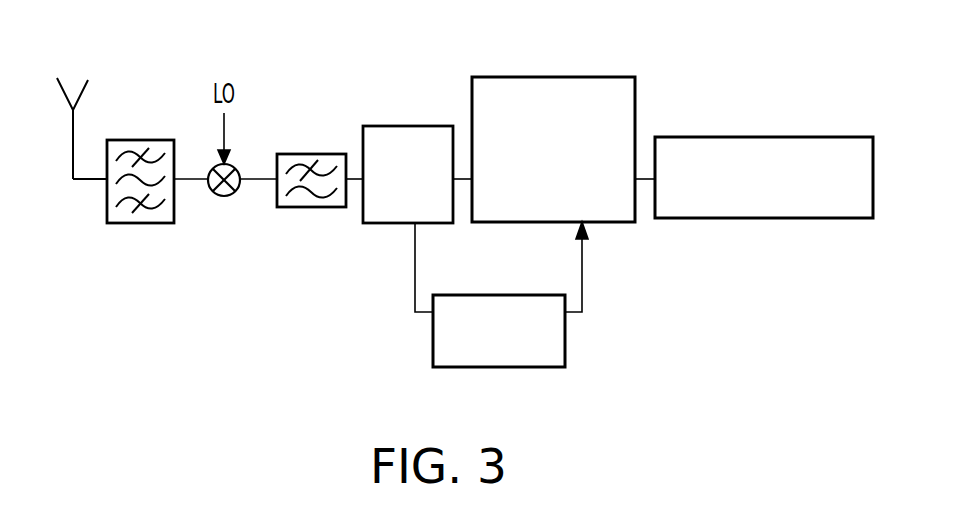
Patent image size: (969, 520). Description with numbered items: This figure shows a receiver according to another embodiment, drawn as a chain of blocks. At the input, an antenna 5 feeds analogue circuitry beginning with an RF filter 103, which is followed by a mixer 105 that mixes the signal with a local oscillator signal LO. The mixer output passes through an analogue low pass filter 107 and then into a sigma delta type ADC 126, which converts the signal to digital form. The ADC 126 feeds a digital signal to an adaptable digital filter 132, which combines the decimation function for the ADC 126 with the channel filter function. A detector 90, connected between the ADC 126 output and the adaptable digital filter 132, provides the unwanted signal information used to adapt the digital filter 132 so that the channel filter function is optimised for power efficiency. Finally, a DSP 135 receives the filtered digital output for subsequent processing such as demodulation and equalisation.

The antenna 5 is at (82, 95).
The RF filter 103 is at (138, 223).
The mixer 105 is at (225, 197).
The analogue low pass filter 107 is at (312, 154).
The sigma delta ADC 126 is at (408, 126).
The adaptable digital filter 132 is at (557, 77).
The DSP 135 is at (765, 218).
The detector 90 is at (565, 343).